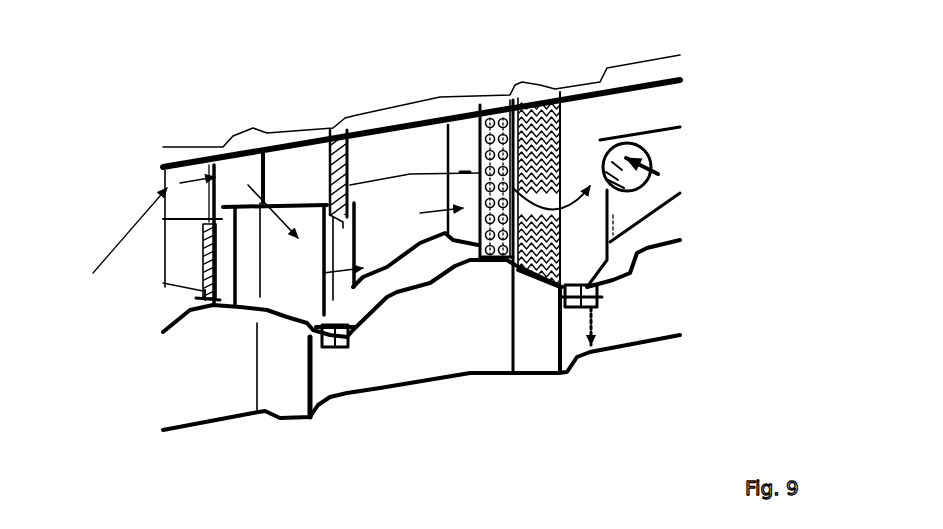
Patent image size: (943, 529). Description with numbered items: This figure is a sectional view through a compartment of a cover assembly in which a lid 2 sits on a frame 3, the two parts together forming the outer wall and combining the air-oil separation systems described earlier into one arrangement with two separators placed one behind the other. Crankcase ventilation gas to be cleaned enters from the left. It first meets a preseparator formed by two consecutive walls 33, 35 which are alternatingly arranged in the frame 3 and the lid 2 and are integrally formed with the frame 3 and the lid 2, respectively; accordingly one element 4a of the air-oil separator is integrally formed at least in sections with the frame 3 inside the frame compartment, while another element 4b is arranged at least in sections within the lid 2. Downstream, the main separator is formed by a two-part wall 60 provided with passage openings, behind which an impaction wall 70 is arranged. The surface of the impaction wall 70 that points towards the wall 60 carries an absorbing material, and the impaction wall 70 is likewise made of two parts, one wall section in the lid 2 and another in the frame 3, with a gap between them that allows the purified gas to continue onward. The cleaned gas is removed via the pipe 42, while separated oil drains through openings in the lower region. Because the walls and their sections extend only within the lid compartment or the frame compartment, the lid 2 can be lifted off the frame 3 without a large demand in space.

The lid 2 is at (265, 137).
The frame 3 is at (300, 377).
The element of the air-oil separator 4a is at (202, 252).
The other element of the air-oil separator 4b is at (328, 132).
The preseparator wall 33 is at (200, 292).
The preseparator wall 35 is at (343, 127).
The pipe 42 is at (643, 135).
The two-part wall 60 is at (518, 258).
The impaction wall 70 is at (556, 98).